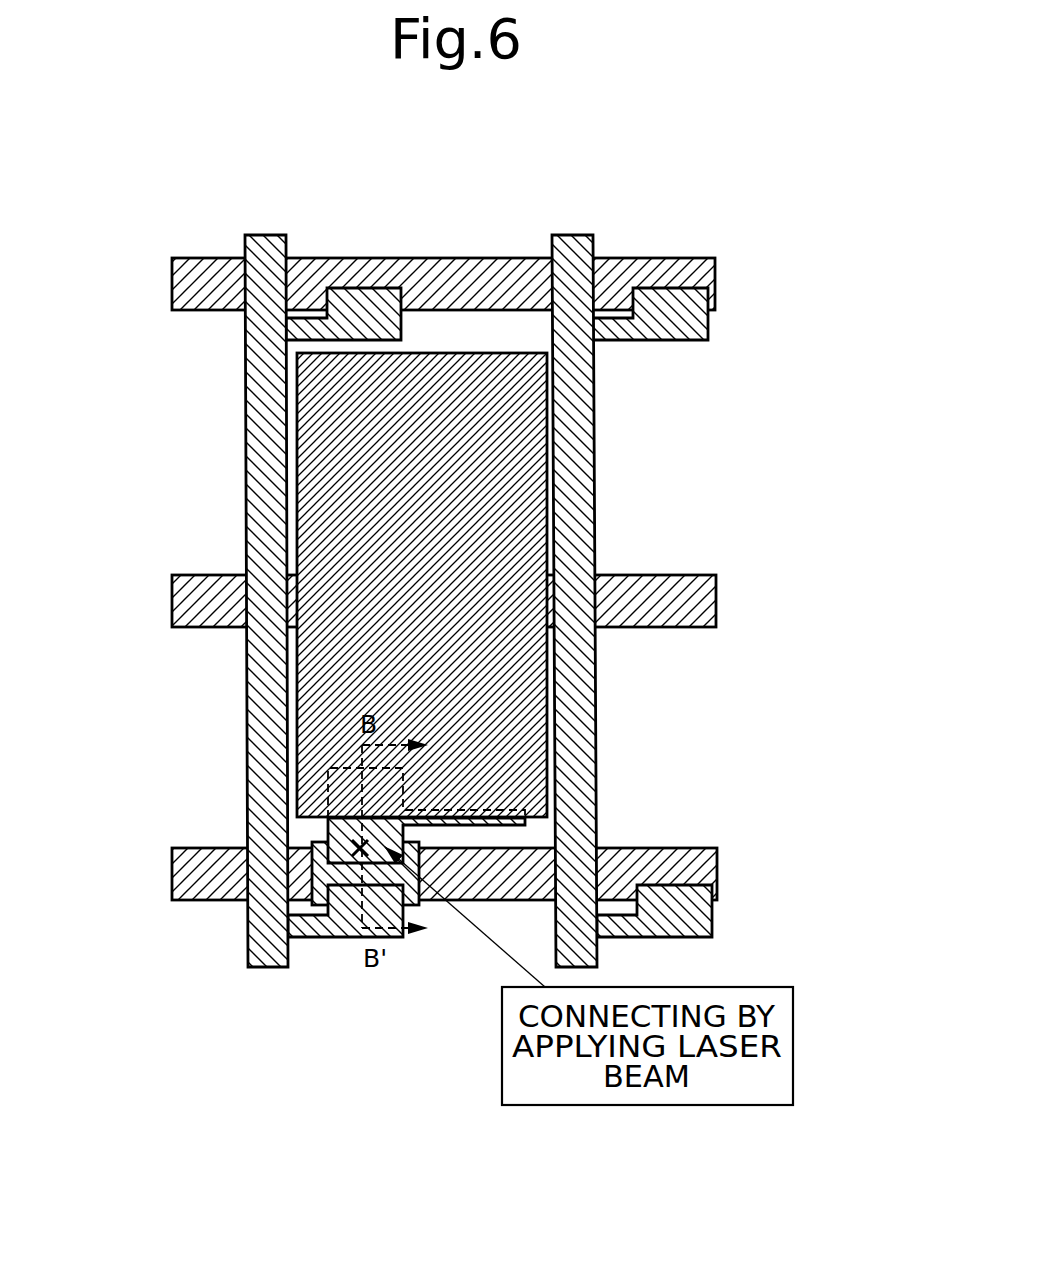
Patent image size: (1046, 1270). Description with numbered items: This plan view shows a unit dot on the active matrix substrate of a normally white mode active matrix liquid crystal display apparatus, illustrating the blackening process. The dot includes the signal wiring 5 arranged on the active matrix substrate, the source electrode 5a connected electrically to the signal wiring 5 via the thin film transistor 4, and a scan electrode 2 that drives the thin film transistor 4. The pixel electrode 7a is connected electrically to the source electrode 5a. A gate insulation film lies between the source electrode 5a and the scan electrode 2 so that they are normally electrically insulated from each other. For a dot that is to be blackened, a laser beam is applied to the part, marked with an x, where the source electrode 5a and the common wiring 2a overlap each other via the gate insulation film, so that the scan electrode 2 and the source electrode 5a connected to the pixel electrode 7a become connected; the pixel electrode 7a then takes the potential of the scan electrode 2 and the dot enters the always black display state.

The scan electrode 2 is at (695, 867).
The common wiring 2a is at (693, 595).
The thin film transistor 4 is at (330, 870).
The signal wiring 5 is at (272, 463).
The source electrode 5a is at (380, 835).
The pixel electrode 7a is at (545, 418).